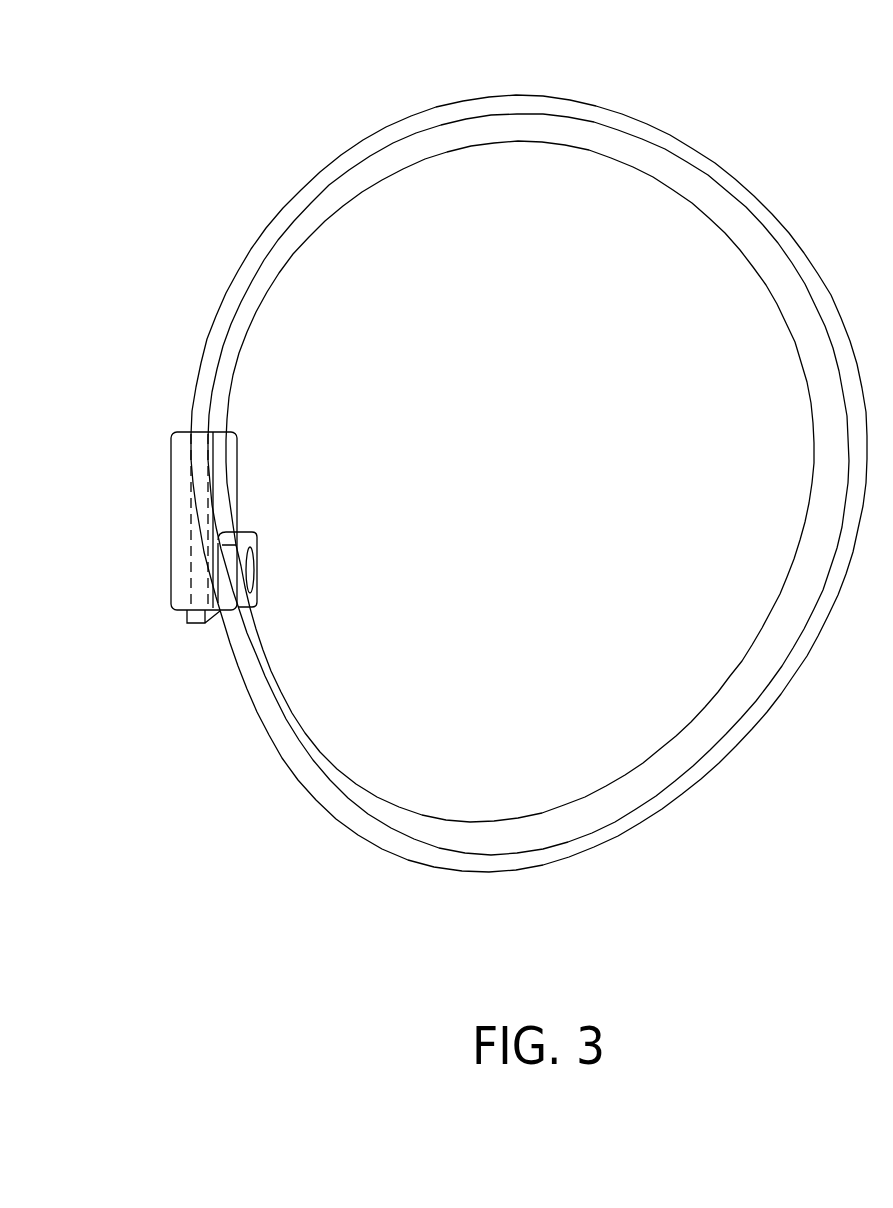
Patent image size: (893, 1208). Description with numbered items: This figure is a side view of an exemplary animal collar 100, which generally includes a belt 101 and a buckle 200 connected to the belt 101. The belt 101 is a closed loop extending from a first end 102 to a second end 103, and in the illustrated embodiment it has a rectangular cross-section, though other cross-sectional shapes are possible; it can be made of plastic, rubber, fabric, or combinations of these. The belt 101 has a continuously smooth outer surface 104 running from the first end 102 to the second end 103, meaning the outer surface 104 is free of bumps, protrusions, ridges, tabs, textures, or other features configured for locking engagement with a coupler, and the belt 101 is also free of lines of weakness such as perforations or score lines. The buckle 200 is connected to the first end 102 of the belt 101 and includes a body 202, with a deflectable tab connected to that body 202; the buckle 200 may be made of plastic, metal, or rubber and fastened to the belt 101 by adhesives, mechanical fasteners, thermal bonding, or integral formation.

The animal collar 100 is at (757, 82).
The belt 101 is at (317, 172).
The first end 102 is at (250, 532).
The second end 103 is at (195, 625).
The outer surface 104 is at (302, 792).
The buckle 200 is at (148, 538).
The body 202 is at (177, 432).